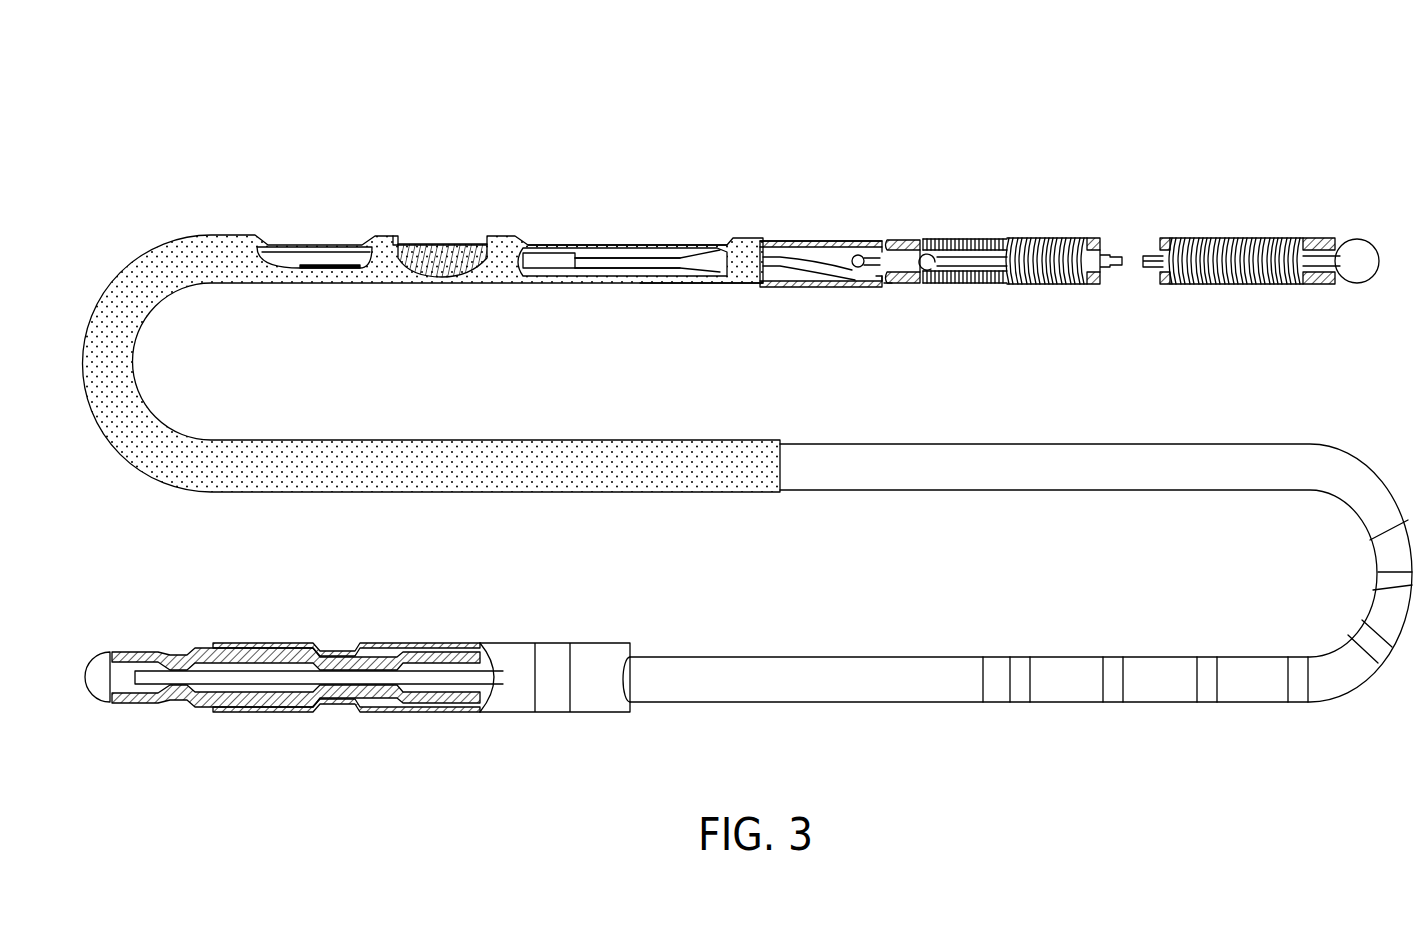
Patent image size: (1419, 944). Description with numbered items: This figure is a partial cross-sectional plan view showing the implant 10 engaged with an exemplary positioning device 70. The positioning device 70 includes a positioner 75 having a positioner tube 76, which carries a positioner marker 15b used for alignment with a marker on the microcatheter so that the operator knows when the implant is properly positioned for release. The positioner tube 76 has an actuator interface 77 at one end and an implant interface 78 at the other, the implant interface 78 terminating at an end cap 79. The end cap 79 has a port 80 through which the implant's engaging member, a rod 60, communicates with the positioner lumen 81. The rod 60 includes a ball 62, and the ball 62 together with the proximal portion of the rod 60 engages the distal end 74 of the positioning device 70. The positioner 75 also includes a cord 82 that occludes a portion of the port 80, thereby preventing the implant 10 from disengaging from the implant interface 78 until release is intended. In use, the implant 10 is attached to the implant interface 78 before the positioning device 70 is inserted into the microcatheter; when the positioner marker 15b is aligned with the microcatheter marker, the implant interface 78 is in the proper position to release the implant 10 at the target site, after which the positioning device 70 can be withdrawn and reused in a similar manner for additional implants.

The implant 10 is at (1053, 182).
The positioner marker 15b is at (450, 247).
The member for engaging a positioning device 60 is at (890, 250).
The ball 62 is at (863, 247).
The positioning device 70 is at (738, 102).
The distal end 74 is at (856, 135).
The positioner 75 is at (381, 177).
The positioner tube 76 is at (853, 282).
The actuator interface 77 is at (433, 765).
The implant interface 78 is at (731, 313).
The end cap 79 is at (880, 283).
The port 80 is at (887, 282).
The positioner lumen 81 is at (805, 248).
The cord 82 is at (597, 248).